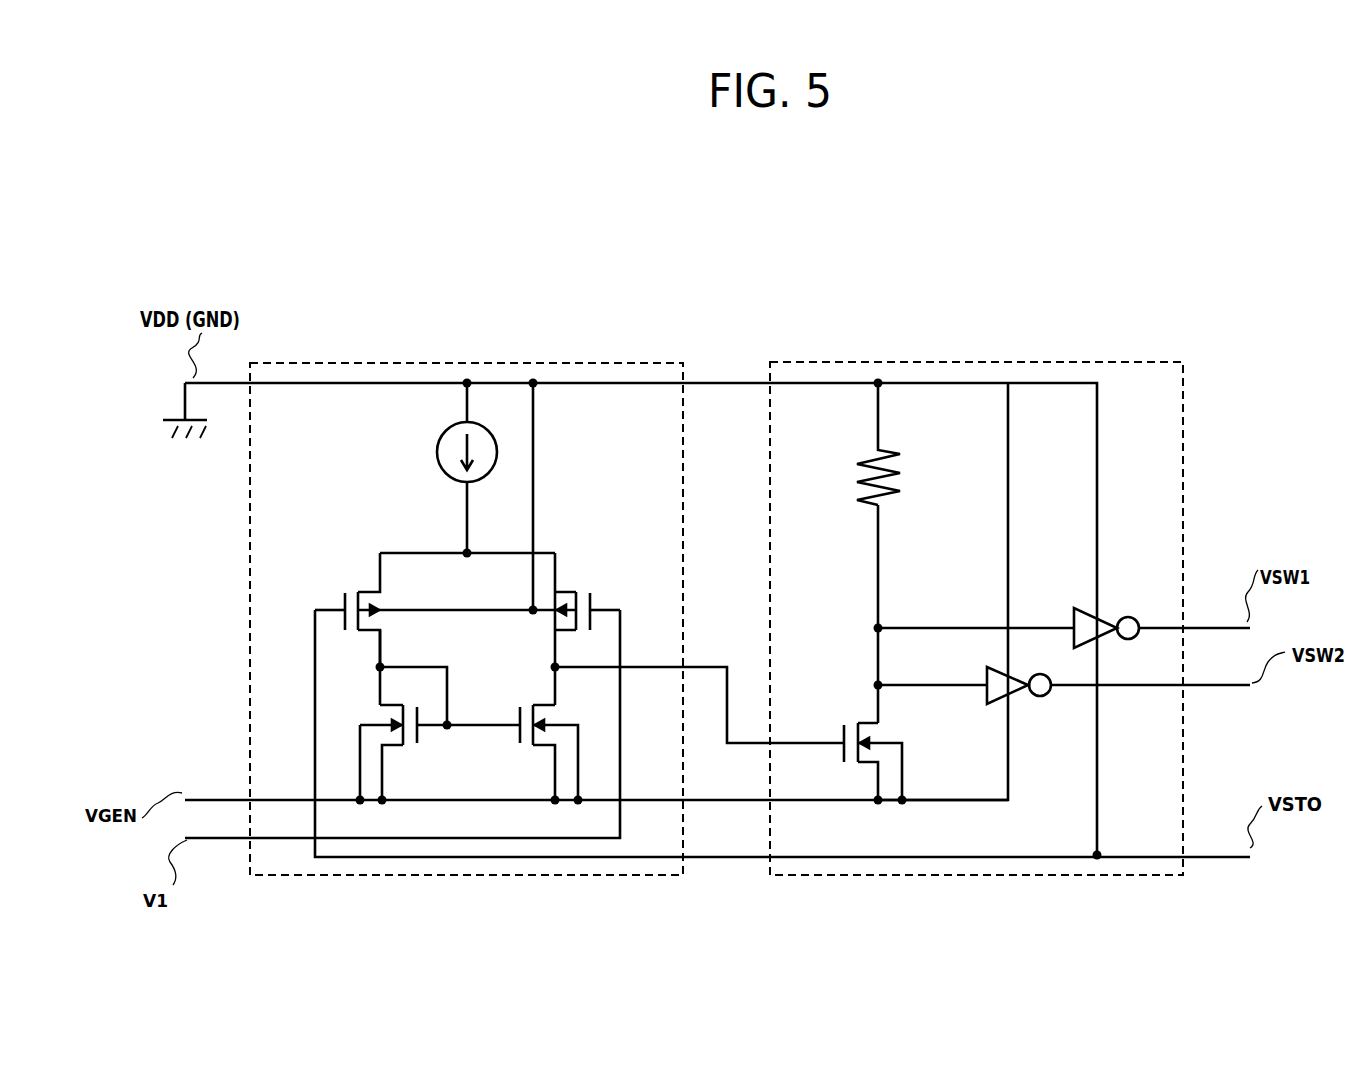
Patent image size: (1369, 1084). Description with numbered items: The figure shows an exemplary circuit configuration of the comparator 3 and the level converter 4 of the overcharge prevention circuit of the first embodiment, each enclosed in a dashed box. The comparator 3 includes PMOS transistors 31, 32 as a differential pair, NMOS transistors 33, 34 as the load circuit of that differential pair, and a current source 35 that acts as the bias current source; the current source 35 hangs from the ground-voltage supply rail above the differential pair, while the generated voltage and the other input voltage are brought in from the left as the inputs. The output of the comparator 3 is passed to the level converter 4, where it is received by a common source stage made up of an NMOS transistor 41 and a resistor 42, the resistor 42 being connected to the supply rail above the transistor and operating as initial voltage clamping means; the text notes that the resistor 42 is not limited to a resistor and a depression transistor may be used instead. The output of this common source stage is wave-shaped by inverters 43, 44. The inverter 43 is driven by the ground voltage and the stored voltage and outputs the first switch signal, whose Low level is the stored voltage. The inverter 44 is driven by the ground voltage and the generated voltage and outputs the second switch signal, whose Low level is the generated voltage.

The comparator 3 is at (365, 358).
The level converter 4 is at (1137, 343).
The PMOS transistor 31 is at (345, 582).
The PMOS transistor 32 is at (568, 583).
The NMOS transistor 33 is at (405, 752).
The NMOS transistor 34 is at (532, 702).
The current source 35 is at (427, 455).
The NMOS transistor 41 is at (858, 718).
The resistor 42 is at (860, 493).
The inverter 43 is at (1108, 608).
The inverter 44 is at (980, 700).